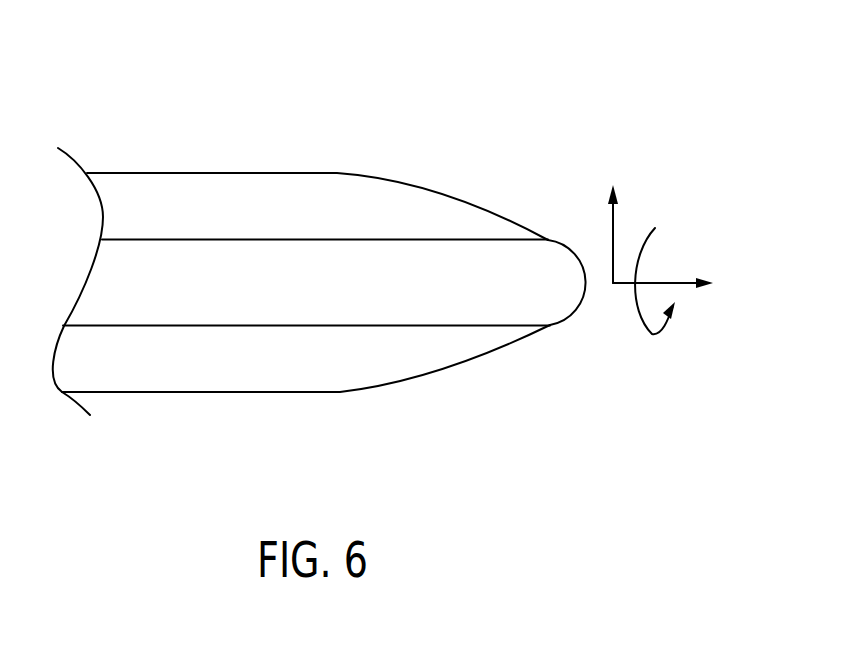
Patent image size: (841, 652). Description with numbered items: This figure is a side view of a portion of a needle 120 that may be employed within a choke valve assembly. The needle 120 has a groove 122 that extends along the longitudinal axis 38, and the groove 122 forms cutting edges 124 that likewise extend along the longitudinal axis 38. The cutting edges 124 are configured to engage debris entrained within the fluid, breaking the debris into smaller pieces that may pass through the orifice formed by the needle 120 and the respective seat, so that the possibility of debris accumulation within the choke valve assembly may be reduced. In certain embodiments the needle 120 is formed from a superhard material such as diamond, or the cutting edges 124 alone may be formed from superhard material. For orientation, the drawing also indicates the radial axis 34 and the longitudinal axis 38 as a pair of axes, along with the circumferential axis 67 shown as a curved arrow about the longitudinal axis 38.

The needle 120 is at (514, 150).
The groove 122 is at (553, 293).
The cutting edges 124 is at (327, 240).
The radial axis 34 is at (613, 220).
The longitudinal axis 38 is at (675, 283).
The circumferential axis 67 is at (652, 335).